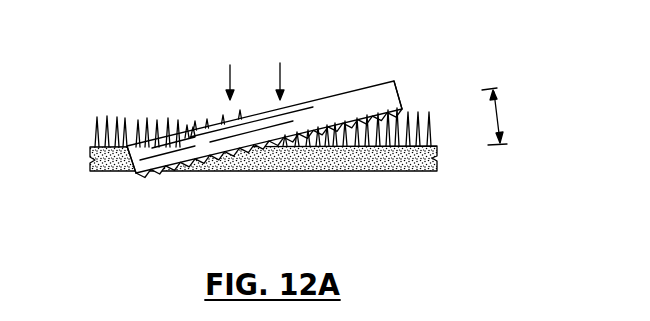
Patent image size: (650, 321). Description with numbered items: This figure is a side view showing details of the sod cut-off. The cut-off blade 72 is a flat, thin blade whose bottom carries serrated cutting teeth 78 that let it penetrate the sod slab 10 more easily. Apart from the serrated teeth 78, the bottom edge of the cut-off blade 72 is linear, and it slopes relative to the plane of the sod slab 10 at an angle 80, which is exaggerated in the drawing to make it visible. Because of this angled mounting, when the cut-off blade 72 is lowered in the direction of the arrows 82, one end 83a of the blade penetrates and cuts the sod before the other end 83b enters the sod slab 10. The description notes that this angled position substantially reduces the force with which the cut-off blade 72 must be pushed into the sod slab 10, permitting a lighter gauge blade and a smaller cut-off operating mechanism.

The sod slab 10 is at (439, 160).
The cut-off blade 72 is at (357, 97).
The serrated cutting teeth 78 is at (391, 143).
The angle 80 is at (497, 112).
The arrows 82 is at (230, 65).
The one end of the cut-off blade 83a is at (127, 162).
The other end of the cut-off blade 83b is at (401, 100).